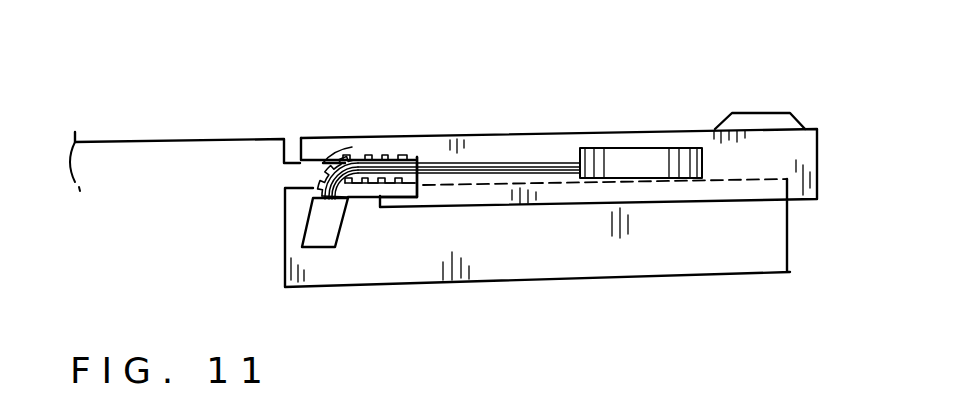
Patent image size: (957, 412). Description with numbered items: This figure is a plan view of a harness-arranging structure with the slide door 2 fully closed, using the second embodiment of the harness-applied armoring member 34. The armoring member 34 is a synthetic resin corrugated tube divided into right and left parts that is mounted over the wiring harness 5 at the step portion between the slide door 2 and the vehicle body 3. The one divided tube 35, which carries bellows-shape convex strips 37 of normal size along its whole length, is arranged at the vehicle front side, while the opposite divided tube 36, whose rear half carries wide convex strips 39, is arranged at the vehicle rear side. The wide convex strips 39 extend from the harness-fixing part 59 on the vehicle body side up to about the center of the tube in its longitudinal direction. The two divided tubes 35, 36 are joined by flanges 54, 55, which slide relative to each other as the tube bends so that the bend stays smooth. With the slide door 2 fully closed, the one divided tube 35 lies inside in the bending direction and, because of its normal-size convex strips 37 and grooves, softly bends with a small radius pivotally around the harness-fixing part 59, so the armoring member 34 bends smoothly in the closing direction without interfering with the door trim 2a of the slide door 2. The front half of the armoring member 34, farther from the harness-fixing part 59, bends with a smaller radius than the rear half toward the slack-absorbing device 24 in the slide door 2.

The slide door 2 is at (594, 126).
The door trim 2a is at (562, 187).
The vehicle body 3 is at (176, 138).
The wiring harness 5 is at (505, 160).
The slack-absorbing device 24 is at (642, 147).
The harness-applied armoring member 34 is at (382, 134).
The one divided tube 35 is at (430, 205).
The opposite divided tube 36 is at (427, 138).
The convex strips 37 is at (397, 156).
The wide convex strips 39 is at (323, 160).
The flange 54 is at (387, 190).
The flange 55 is at (387, 190).
The harness-fixing part 59 is at (320, 247).